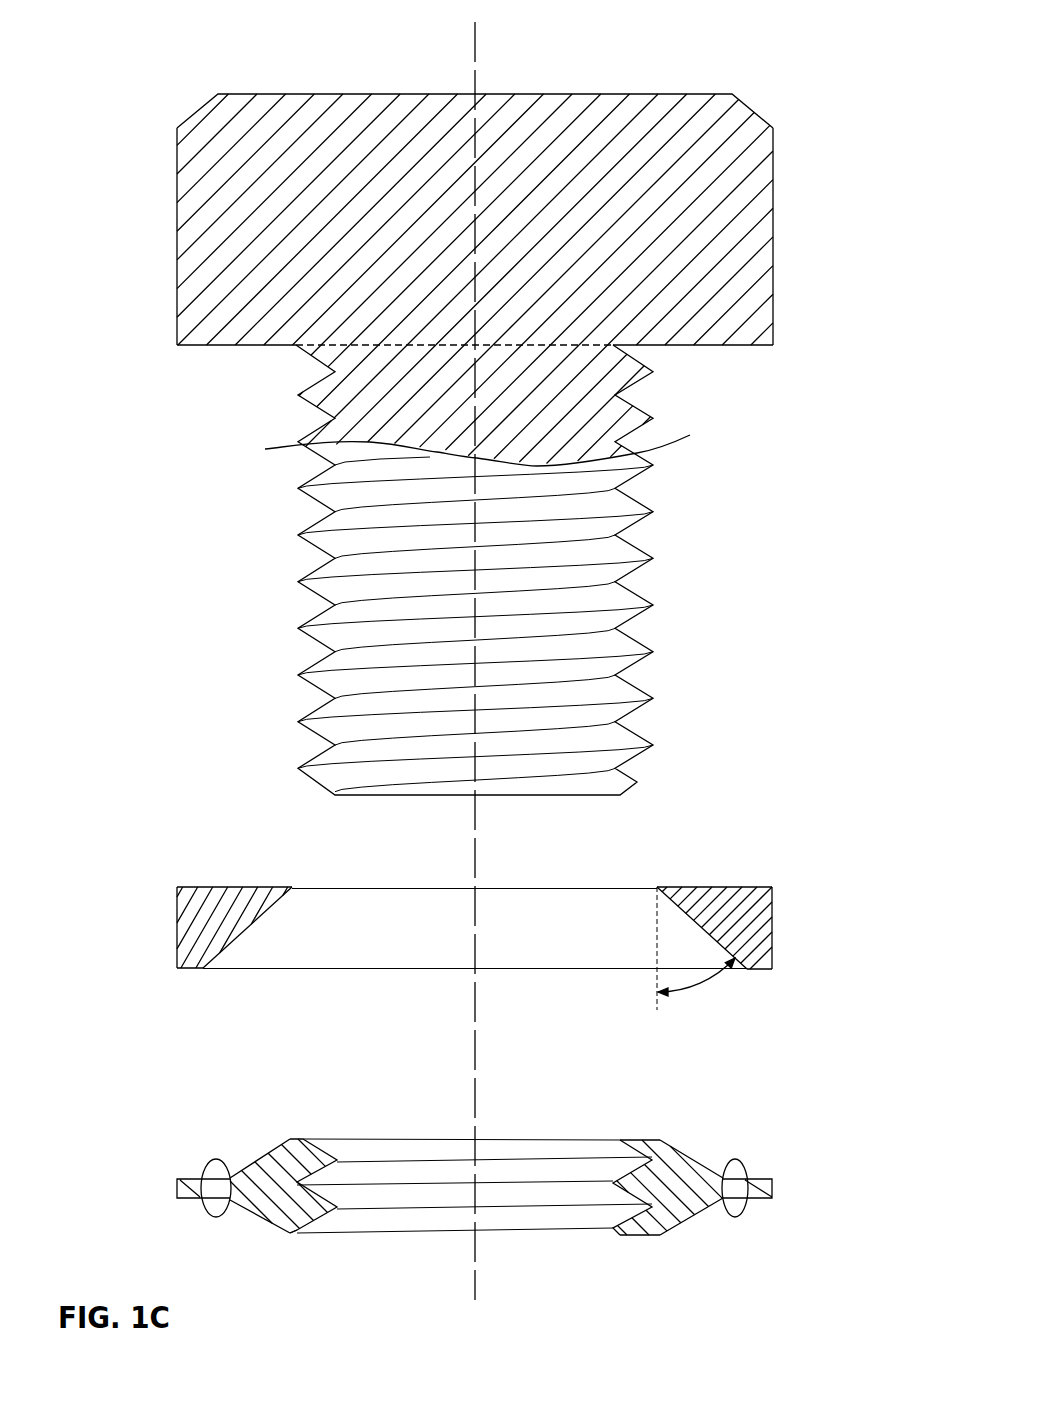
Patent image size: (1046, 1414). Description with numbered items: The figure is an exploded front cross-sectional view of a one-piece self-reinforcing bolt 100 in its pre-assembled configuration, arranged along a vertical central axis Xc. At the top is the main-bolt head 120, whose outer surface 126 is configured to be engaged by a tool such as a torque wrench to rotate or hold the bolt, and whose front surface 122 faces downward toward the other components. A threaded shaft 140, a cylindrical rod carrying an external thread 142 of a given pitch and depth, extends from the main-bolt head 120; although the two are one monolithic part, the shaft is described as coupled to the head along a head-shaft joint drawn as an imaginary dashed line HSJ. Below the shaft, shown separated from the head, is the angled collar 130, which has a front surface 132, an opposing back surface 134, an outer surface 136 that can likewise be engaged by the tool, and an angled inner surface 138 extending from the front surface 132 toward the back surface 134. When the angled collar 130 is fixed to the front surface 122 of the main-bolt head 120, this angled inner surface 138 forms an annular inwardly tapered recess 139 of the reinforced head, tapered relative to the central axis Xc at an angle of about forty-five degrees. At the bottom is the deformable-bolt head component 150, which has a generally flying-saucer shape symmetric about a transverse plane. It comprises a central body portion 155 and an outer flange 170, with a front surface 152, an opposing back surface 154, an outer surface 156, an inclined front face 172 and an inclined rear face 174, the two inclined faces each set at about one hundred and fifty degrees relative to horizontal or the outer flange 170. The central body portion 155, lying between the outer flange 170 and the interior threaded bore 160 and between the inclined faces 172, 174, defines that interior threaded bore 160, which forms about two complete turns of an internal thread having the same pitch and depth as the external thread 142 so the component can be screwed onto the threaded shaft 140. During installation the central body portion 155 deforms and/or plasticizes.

The bolt 100 is at (168, 56).
The central axis Xc is at (476, 62).
The main-bolt head 120 is at (580, 116).
The outer surface 126 is at (177, 178).
The front surface 122 is at (193, 347).
The head-shaft joint HSJ is at (566, 345).
The threaded shaft 140 is at (350, 636).
The external thread 142 is at (648, 698).
The angled collar 130 is at (165, 868).
The opposing back surface 134 is at (222, 887).
The outer surface 136 is at (177, 908).
The front surface 132 is at (188, 968).
The angled inner surface 138 is at (225, 953).
The annular inwardly tapered recess 139 is at (280, 928).
The deformable-bolt head component 150 is at (683, 1137).
The front surface 152 is at (298, 1235).
The opposing back surface 154 is at (300, 1139).
The central body portion 155 is at (257, 1196).
The outer surface 156 is at (177, 1188).
The interior threaded bore 160 is at (432, 1143).
The outer flange 170 is at (203, 1200).
The inclined front face 172 is at (277, 1243).
The inclined rear face 174 is at (232, 1147).